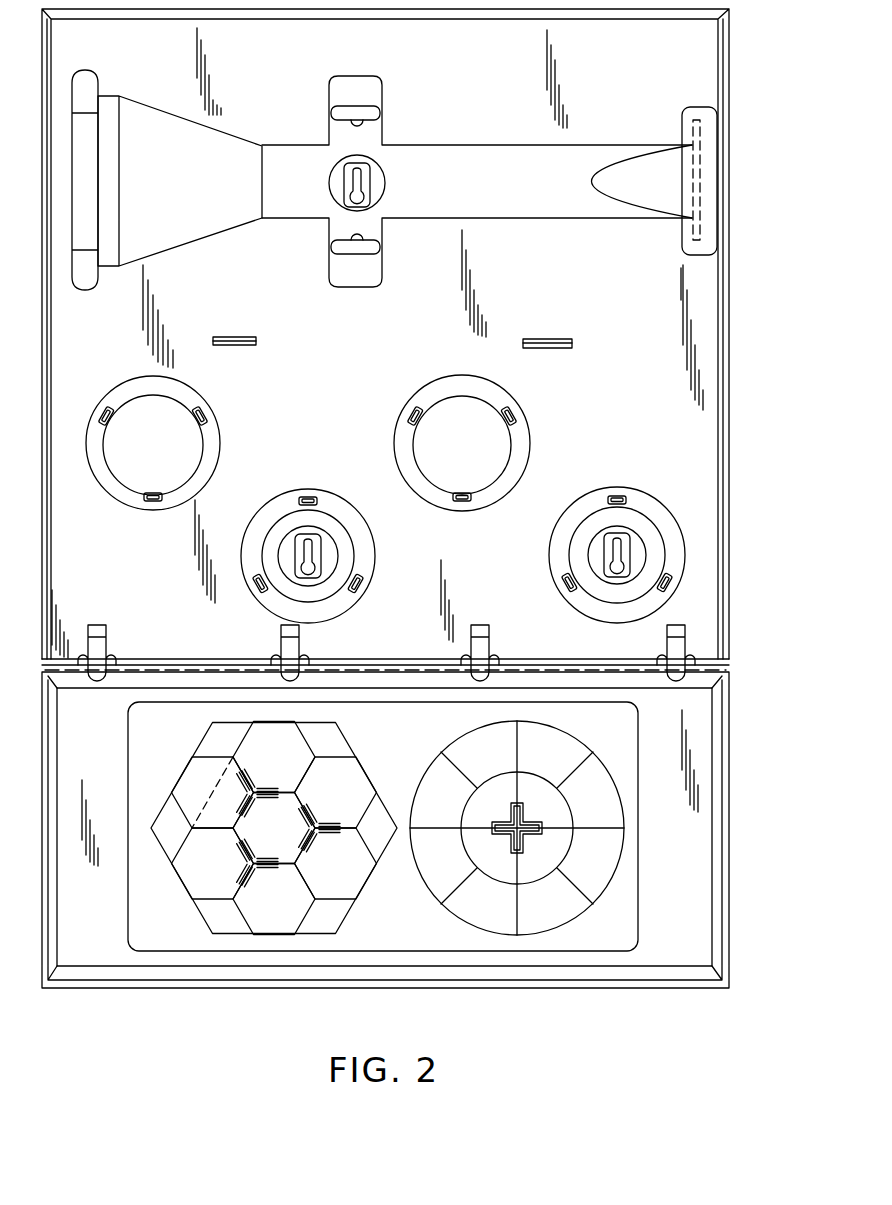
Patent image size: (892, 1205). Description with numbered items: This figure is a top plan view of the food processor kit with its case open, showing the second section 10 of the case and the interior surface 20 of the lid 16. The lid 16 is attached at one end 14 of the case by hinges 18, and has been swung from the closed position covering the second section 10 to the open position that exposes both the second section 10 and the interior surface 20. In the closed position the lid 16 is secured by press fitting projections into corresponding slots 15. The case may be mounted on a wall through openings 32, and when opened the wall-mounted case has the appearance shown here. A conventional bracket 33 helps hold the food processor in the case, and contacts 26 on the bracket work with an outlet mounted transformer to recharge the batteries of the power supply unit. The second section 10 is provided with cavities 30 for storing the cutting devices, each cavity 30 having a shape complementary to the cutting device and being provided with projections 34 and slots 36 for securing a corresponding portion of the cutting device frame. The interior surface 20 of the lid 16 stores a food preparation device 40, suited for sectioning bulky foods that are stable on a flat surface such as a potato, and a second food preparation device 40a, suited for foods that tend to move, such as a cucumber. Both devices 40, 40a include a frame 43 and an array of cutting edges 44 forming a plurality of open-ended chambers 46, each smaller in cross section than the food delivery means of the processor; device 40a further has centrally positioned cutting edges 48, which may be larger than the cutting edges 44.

The second section 10 is at (702, 377).
The end 14 is at (731, 661).
The slot 15 is at (234, 336).
The lid 16 is at (728, 795).
The hinge 18 is at (678, 644).
The interior surface 20 is at (693, 742).
The contacts 26 is at (708, 143).
The cavity 30 is at (503, 441).
The opening 32 is at (363, 190).
The bracket 33 is at (374, 110).
The projection 34 is at (360, 584).
The slot 36 is at (352, 590).
The food preparation device 40 is at (188, 900).
The food preparation device 40a is at (608, 880).
The frame 43 is at (343, 742).
The cutting edges 44 is at (307, 770).
The open-ended chamber 46 is at (357, 782).
The centrally positioned cutting edges 48 is at (525, 835).